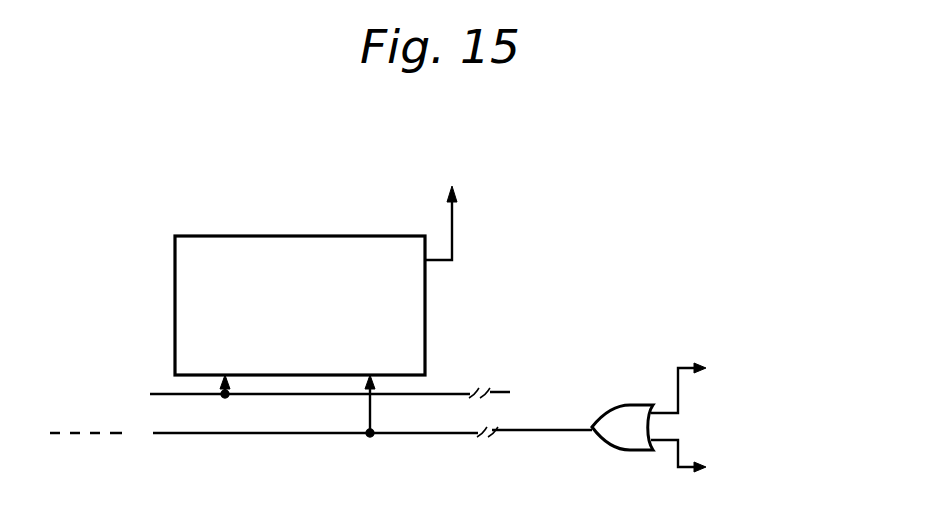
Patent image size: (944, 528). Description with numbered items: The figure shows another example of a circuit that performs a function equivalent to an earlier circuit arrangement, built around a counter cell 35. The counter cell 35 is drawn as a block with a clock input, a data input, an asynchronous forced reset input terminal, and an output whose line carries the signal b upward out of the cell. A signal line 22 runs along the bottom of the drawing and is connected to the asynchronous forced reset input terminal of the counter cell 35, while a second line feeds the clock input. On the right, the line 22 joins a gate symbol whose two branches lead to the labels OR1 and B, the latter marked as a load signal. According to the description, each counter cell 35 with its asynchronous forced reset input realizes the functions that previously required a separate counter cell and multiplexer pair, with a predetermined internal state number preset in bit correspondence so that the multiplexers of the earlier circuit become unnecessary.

The counter cell 35 is at (288, 236).
The reset signal line 22 is at (527, 428).
The flip-flop output b is at (442, 206).
The OR1 signal output OR1 is at (706, 383).
The (B) LOAD signal output B is at (715, 467).